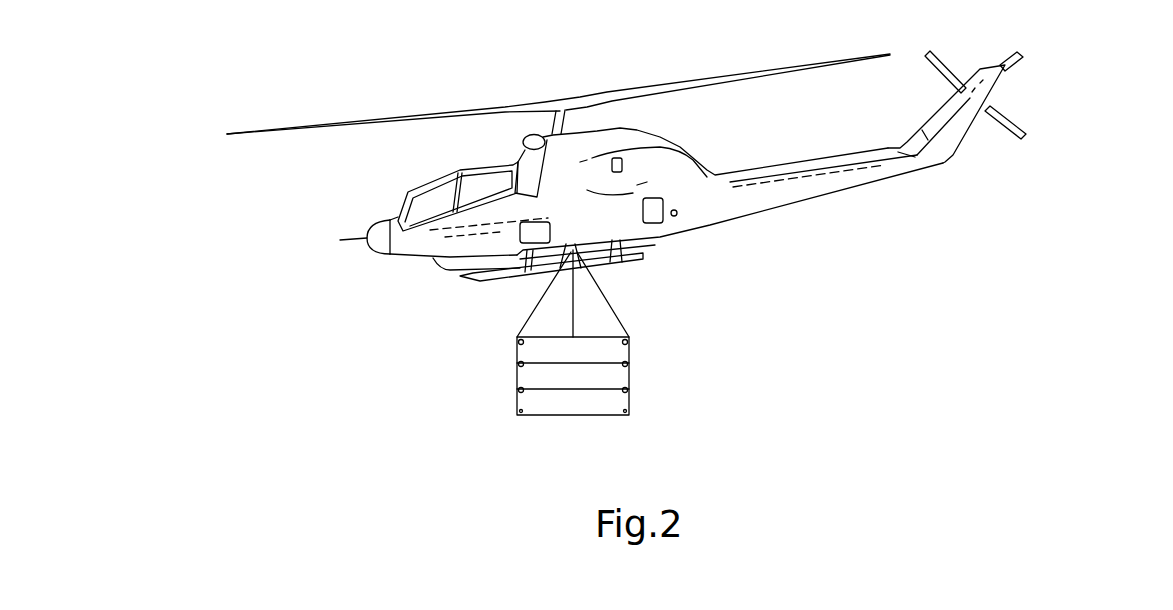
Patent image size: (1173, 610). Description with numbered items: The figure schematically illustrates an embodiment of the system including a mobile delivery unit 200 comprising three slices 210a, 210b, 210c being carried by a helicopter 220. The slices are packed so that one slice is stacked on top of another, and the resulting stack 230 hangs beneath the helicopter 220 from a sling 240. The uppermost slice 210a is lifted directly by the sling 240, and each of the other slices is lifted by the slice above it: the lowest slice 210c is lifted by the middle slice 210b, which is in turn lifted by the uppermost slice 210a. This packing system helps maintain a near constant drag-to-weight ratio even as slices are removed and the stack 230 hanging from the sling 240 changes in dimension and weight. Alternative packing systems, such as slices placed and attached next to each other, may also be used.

The mobile delivery unit 200 is at (805, 373).
The helicopter 220 is at (767, 210).
The sling 240 is at (603, 290).
The stack 230 is at (490, 375).
The uppermost slice 210a is at (529, 349).
The slice 210b is at (529, 376).
The slice 210c is at (529, 400).